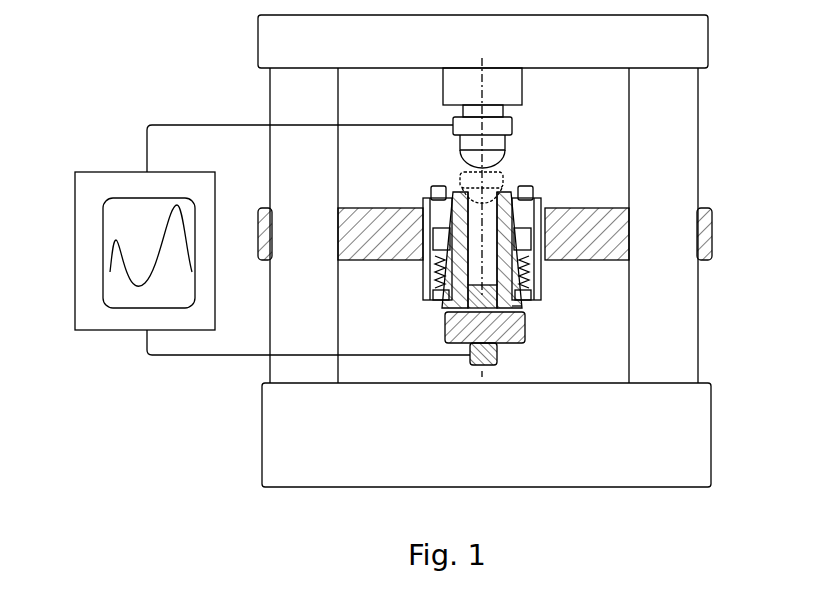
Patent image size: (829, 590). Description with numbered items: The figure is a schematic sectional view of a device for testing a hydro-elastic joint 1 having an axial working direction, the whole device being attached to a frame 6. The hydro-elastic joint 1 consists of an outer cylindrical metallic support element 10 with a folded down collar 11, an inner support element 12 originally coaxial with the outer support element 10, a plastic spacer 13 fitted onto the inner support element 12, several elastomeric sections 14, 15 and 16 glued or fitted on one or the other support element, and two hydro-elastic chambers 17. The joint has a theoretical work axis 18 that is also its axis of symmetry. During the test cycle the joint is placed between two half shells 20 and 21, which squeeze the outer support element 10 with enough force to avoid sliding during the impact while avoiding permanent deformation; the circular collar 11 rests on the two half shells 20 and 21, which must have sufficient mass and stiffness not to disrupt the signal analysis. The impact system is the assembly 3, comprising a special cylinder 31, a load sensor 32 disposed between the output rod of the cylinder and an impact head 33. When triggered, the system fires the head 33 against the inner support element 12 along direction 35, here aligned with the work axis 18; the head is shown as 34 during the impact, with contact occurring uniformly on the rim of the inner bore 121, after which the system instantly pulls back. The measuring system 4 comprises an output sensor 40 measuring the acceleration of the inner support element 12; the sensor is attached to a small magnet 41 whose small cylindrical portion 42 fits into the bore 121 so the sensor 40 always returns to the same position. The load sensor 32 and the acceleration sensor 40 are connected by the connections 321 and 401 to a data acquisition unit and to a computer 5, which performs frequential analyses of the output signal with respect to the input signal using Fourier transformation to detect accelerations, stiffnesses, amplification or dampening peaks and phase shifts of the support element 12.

The hydro-elastic joint 1 is at (475, 250).
The impact system assembly 3 is at (505, 176).
The measuring system 4 is at (498, 339).
The computer 5 is at (108, 170).
The frame 6 is at (675, 148).
The outer cylindrical metallic support element 10 is at (425, 268).
The folded down collar 11 is at (562, 204).
The inner support element 12 is at (515, 295).
The plastic spacer 13 is at (547, 267).
The elastomeric section 14 is at (555, 193).
The elastomeric section 15 is at (432, 288).
The elastomeric section 16 is at (430, 297).
The hydro-elastic chambers 17 is at (412, 198).
The theoretical work axis 18 is at (482, 371).
The half shell 20 is at (378, 207).
The half shell 21 is at (593, 262).
The special cylinder 31 is at (522, 83).
The load sensor 32 is at (514, 125).
The impact head 33 is at (492, 155).
The impact head during impact 34 is at (497, 178).
The impact direction 35 is at (478, 165).
The output sensor 40 is at (500, 357).
The small magnet 41 is at (527, 333).
The small cylindrical portion 42 is at (512, 303).
The inner bore 121 is at (495, 255).
The connection 321 is at (150, 123).
The connection 401 is at (149, 356).